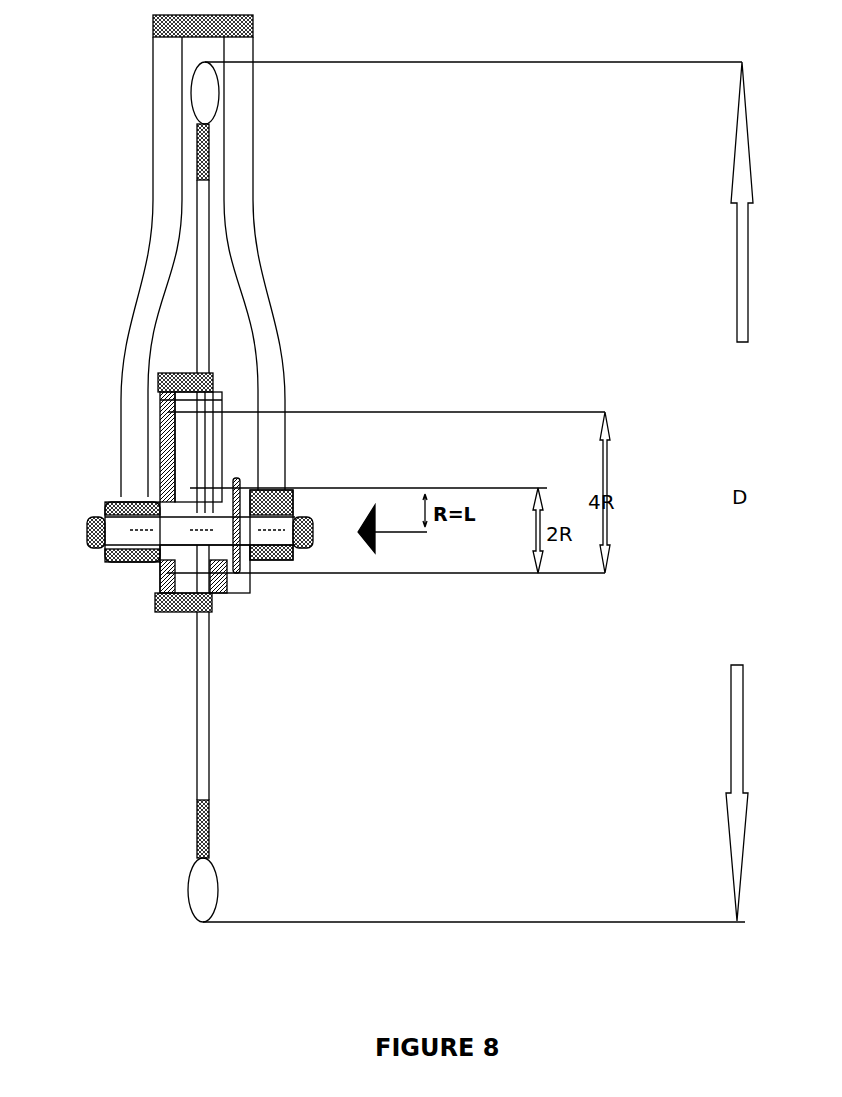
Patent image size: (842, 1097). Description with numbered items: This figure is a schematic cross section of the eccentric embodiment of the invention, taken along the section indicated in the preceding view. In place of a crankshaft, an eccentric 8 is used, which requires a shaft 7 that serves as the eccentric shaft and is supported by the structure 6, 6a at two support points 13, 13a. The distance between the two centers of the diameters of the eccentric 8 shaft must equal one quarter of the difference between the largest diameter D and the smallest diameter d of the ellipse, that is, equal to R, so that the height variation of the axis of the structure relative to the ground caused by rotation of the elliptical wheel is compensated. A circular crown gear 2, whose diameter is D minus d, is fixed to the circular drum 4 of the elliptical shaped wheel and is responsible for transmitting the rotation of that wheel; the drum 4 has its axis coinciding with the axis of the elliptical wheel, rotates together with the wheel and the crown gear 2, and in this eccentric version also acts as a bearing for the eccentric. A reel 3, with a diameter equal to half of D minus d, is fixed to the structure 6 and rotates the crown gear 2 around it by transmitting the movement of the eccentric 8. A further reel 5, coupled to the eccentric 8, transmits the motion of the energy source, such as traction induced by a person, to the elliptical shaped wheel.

The crown gear 2 is at (158, 378).
The reel 3 is at (160, 565).
The circular drum 4 is at (187, 607).
The reel 5 is at (237, 552).
The structure 6 is at (148, 256).
The structure 6a is at (253, 262).
The shaft 7 is at (160, 470).
The eccentric 8 is at (162, 420).
The support point 13 is at (106, 500).
The support point 13a is at (262, 510).